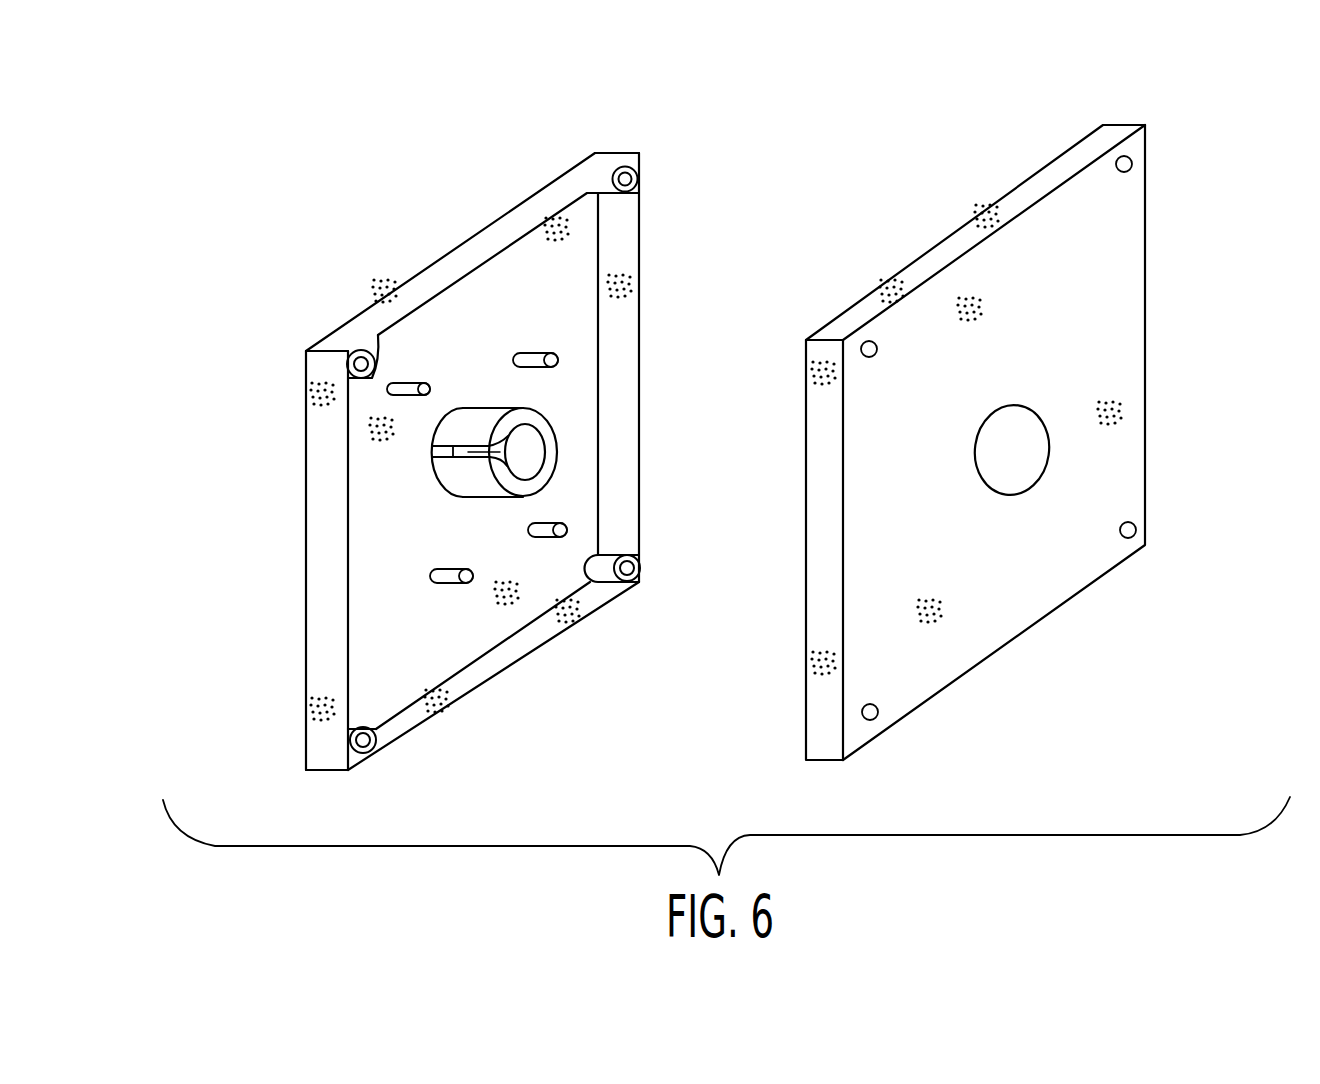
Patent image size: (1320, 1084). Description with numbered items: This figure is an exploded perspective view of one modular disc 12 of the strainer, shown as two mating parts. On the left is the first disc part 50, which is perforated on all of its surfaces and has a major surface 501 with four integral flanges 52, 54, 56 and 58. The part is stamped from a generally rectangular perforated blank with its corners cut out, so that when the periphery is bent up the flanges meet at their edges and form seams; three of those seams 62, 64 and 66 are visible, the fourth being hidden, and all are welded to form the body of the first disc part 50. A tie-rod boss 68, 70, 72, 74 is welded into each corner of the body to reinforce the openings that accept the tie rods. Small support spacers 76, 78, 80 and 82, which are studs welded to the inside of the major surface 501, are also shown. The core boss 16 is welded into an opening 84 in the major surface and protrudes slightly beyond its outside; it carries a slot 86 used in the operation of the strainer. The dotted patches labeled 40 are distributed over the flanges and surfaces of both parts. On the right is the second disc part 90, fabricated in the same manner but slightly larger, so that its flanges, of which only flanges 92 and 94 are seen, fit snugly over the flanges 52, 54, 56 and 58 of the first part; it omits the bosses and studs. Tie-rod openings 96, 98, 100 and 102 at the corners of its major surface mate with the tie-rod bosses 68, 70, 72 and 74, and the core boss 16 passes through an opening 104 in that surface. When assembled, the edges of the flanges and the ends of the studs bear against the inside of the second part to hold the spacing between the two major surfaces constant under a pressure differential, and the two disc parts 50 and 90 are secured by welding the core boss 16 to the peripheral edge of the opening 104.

The modular disc 12 is at (707, 253).
The core boss 16 is at (475, 418).
The adhesive 40 is at (378, 295).
The first disc part 50 is at (433, 245).
The major surface 501 is at (590, 378).
The flange 52 is at (513, 222).
The flange 54 is at (632, 232).
The flange 56 is at (510, 650).
The flange 58 is at (306, 565).
The seam 62 is at (323, 352).
The seam 64 is at (615, 153).
The seam 66 is at (330, 772).
The tie-rod boss 68 is at (376, 362).
The tie-rod boss 70 is at (645, 180).
The tie-rod boss 72 is at (638, 566).
The tie-rod boss 74 is at (372, 752).
The support spacer 76 is at (410, 390).
The support spacer 78 is at (535, 358).
The support spacer 80 is at (548, 528).
The support spacer 82 is at (440, 570).
The opening 84 is at (436, 460).
The slot 86 is at (473, 460).
The second disc part 90 is at (1162, 216).
The flange 92 is at (1053, 172).
The flange 94 is at (805, 492).
The tie-rod opening 96 is at (874, 357).
The tie-rod opening 98 is at (1135, 165).
The tie-rod opening 100 is at (1137, 527).
The tie-rod opening 102 is at (880, 718).
The opening 104 is at (1020, 470).